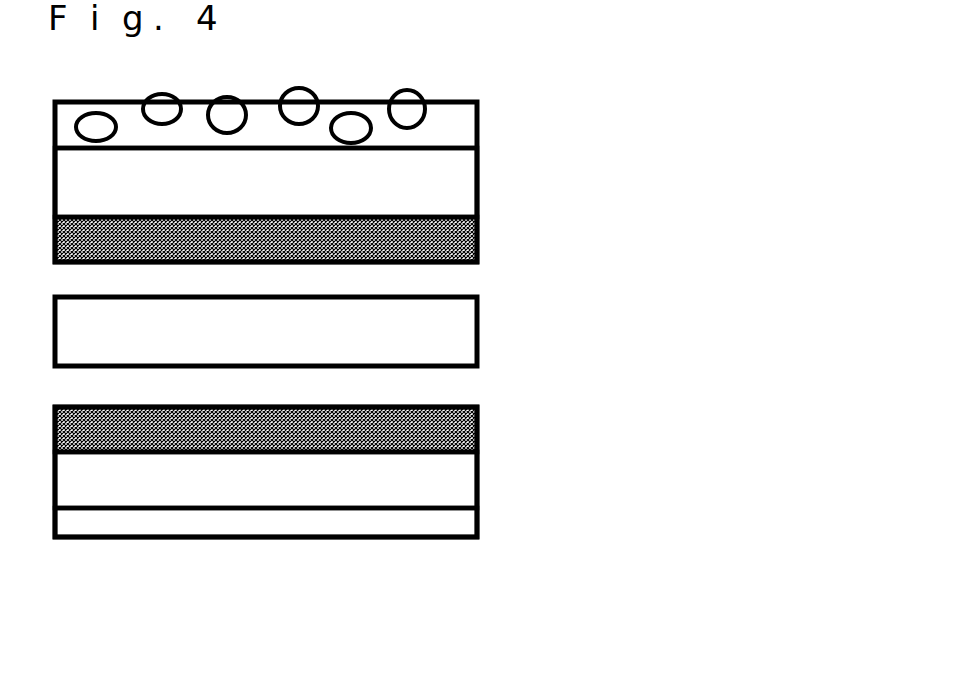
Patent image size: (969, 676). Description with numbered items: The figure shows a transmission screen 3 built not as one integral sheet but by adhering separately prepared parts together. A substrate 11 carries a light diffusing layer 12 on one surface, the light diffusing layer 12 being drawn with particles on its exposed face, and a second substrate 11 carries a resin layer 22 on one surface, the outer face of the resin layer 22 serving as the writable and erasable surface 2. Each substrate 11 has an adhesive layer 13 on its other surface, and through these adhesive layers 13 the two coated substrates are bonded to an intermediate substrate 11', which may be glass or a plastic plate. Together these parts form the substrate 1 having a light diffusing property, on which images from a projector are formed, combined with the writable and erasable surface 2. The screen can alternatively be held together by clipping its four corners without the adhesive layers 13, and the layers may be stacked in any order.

The substrate having a light diffusing property 1 is at (658, 103).
The writable and erasable surface 2 is at (63, 555).
The transmission screen 3 is at (760, 88).
The substrate 11 is at (346, 328).
The another substrate 11' is at (355, 331).
The light diffusing layer 12 is at (565, 128).
The adhesive layer 13 is at (447, 421).
The resin layer 22 is at (565, 526).